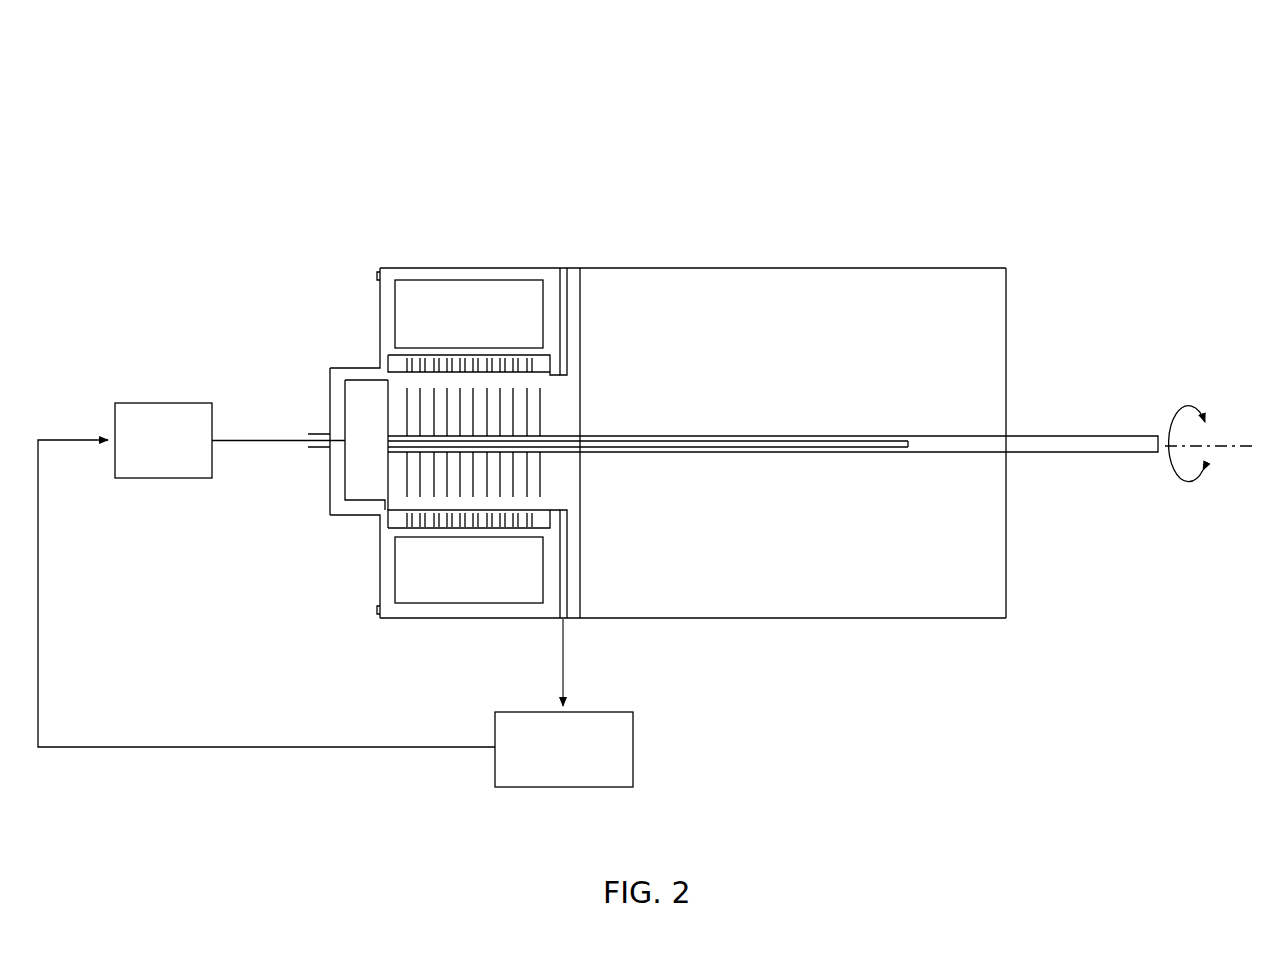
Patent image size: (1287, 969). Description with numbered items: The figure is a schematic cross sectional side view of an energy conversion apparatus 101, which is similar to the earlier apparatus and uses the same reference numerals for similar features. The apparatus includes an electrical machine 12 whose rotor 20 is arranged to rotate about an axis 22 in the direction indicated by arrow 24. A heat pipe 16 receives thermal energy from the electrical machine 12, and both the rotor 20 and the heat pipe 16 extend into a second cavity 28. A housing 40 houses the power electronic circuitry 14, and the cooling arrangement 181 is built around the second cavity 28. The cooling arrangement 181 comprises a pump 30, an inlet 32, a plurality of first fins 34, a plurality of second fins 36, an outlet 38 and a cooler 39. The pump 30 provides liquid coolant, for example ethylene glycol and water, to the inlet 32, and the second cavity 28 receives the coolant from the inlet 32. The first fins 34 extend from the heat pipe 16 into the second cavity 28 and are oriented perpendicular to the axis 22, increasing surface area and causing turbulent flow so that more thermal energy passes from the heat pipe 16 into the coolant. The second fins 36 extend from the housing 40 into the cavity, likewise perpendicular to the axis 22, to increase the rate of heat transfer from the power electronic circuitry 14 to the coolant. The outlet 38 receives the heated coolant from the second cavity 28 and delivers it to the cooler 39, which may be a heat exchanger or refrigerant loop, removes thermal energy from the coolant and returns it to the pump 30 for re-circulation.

The energy conversion apparatus 101 is at (994, 110).
The housing 40 is at (420, 266).
The power electronic circuitry 14 is at (425, 320).
The plurality of second fins 36 is at (395, 358).
The pump 30 is at (147, 402).
The inlet 32 is at (303, 449).
The plurality of first fins 34 is at (405, 483).
The cooling arrangement 181 is at (308, 540).
The second cavity 28 is at (388, 522).
The outlet 38 is at (557, 568).
The cooler 39 is at (637, 745).
The electrical machine 12 is at (822, 648).
The heat pipe 16 is at (655, 437).
The rotor 20 is at (1082, 436).
The axis 22 is at (1183, 450).
The arrow 24 is at (1236, 411).